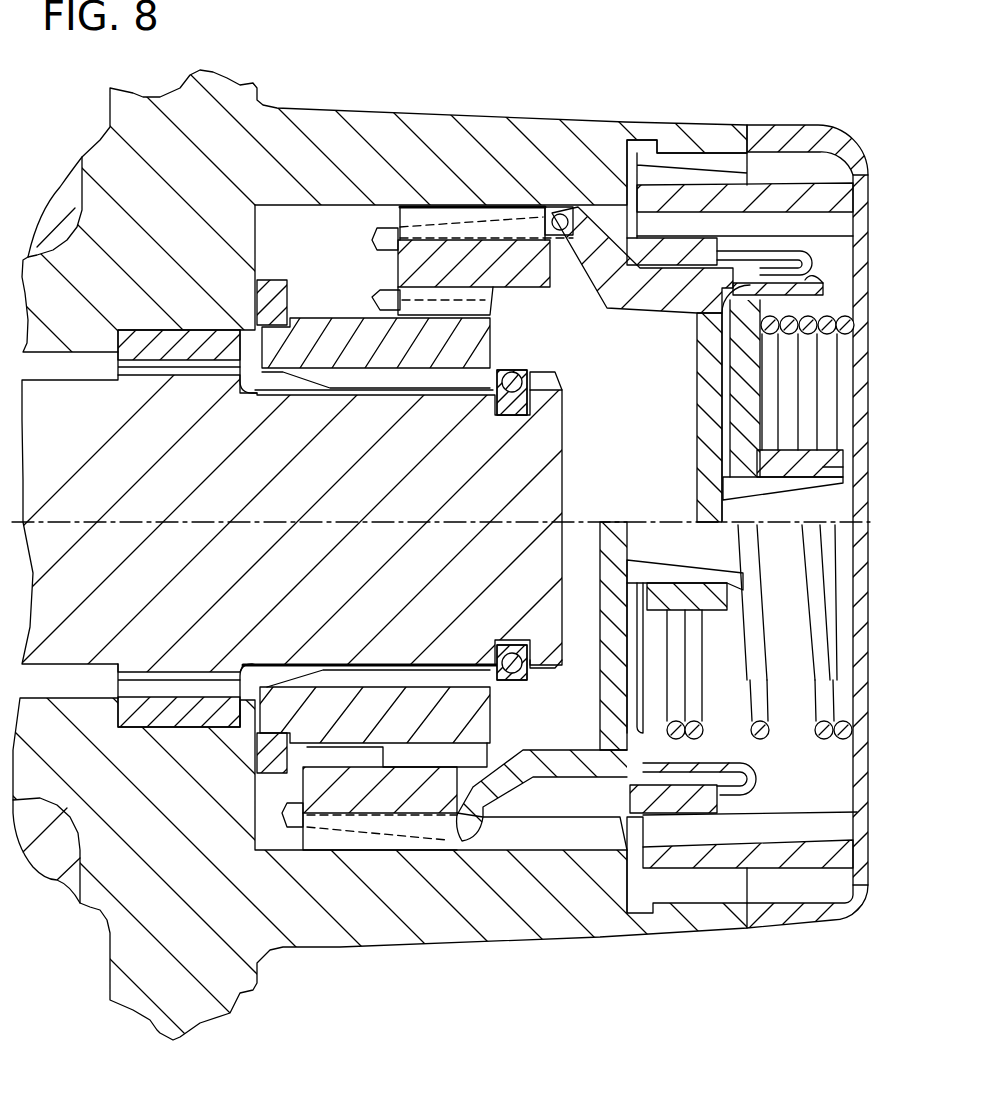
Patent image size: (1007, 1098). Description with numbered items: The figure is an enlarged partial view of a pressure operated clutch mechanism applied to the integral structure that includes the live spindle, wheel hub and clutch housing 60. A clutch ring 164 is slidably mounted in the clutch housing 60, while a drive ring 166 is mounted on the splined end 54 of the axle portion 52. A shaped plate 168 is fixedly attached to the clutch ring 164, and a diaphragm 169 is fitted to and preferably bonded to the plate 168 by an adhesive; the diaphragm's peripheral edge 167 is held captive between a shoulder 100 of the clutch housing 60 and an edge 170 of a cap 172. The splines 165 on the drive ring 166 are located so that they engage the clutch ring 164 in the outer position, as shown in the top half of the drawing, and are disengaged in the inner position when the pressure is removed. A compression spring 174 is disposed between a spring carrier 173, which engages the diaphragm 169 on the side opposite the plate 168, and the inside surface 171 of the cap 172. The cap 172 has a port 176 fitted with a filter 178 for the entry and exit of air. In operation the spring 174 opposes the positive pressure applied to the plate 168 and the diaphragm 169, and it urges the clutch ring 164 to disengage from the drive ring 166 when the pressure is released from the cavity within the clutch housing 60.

The axle portion 52 is at (290, 594).
The splined end 54 is at (541, 380).
The clutch housing 60 is at (436, 108).
The shoulder 100 is at (633, 140).
The clutch ring 164 is at (488, 262).
The splines 165 is at (390, 302).
The drive ring 166 is at (307, 333).
The peripheral edge 167 is at (628, 225).
The shaped plate 168 is at (637, 310).
The diaphragm 169 is at (840, 258).
The edge 170 is at (627, 198).
The inside surface 171 is at (847, 265).
The cap 172 is at (868, 167).
The spring carrier 173 is at (803, 467).
The compression spring 174 is at (793, 393).
The port 176 is at (853, 772).
The filter 178 is at (857, 782).